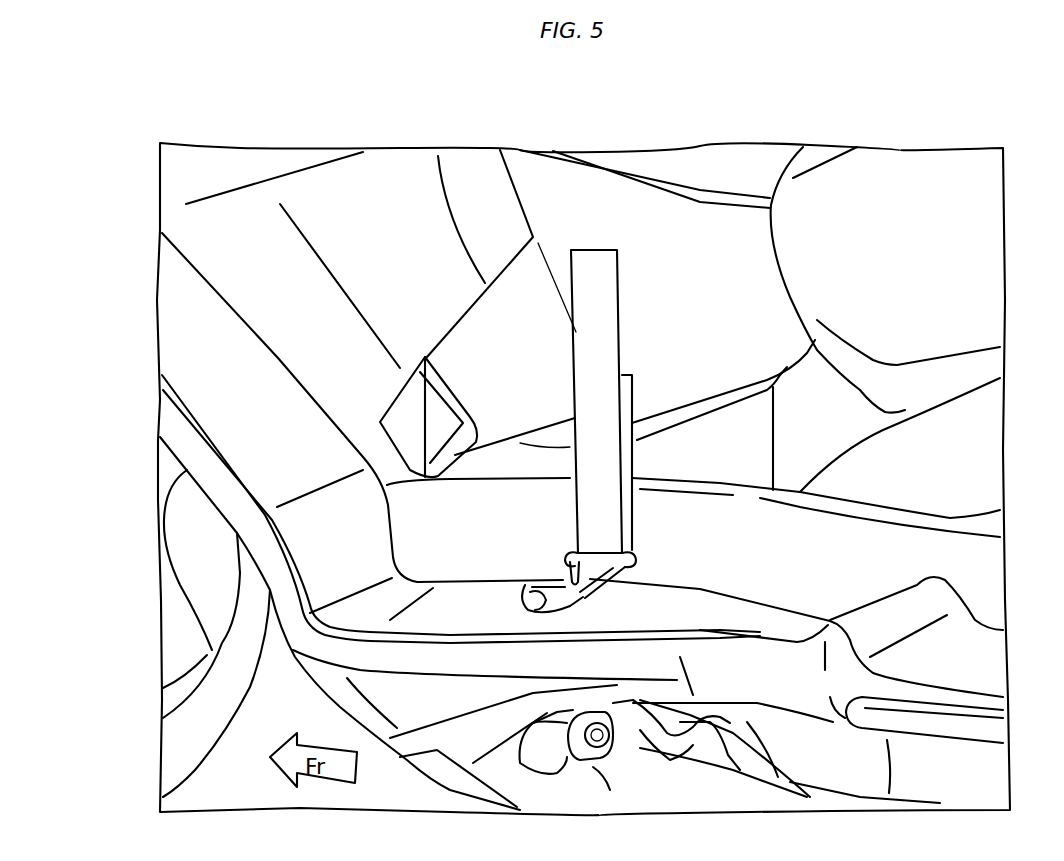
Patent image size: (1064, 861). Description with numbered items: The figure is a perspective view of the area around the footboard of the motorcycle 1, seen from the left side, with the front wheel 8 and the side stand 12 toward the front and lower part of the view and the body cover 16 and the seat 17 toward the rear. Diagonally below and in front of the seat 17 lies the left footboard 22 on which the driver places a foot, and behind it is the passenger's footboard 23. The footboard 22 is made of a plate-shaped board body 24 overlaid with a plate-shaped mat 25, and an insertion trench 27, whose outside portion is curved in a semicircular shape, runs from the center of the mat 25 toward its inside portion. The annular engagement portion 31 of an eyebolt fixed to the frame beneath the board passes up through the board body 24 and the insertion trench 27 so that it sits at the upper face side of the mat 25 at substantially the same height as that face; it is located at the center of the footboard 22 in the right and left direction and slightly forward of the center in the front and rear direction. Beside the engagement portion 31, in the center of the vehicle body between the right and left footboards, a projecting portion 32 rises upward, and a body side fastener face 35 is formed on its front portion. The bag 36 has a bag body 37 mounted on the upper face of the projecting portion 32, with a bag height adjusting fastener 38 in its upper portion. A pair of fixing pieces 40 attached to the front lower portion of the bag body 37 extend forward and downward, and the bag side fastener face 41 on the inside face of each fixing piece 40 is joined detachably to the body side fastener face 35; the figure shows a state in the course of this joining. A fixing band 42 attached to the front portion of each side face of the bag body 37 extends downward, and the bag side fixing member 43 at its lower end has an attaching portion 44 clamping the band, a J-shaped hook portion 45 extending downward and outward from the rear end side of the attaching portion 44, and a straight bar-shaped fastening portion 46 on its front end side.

The vehicle interior 1 is at (415, 181).
The front wheel 8 is at (193, 770).
The side stand 12 is at (692, 772).
The body cover 16 is at (975, 461).
The seat 17 is at (893, 180).
The footboard 22 is at (774, 617).
The passenger's footboard 23 is at (943, 668).
The board body 24 is at (478, 667).
The mat 25 is at (518, 640).
The insertion trench 27 is at (530, 606).
The engagement portion 31 is at (543, 608).
The projecting portion 32 is at (727, 430).
The body side fastener face 35 is at (402, 418).
The bag 36 is at (600, 183).
The bag body 37 is at (660, 163).
The bag height adjusting fastener 38 is at (630, 173).
The fixing piece 40 is at (505, 295).
The bag side fastener face 41 is at (427, 418).
The fixing band 42 is at (583, 267).
The bag side fixing member 43 is at (639, 574).
The attaching portion 44 is at (626, 567).
The J-shaped hook portion 45 is at (584, 585).
The fastening portion 46 is at (575, 598).